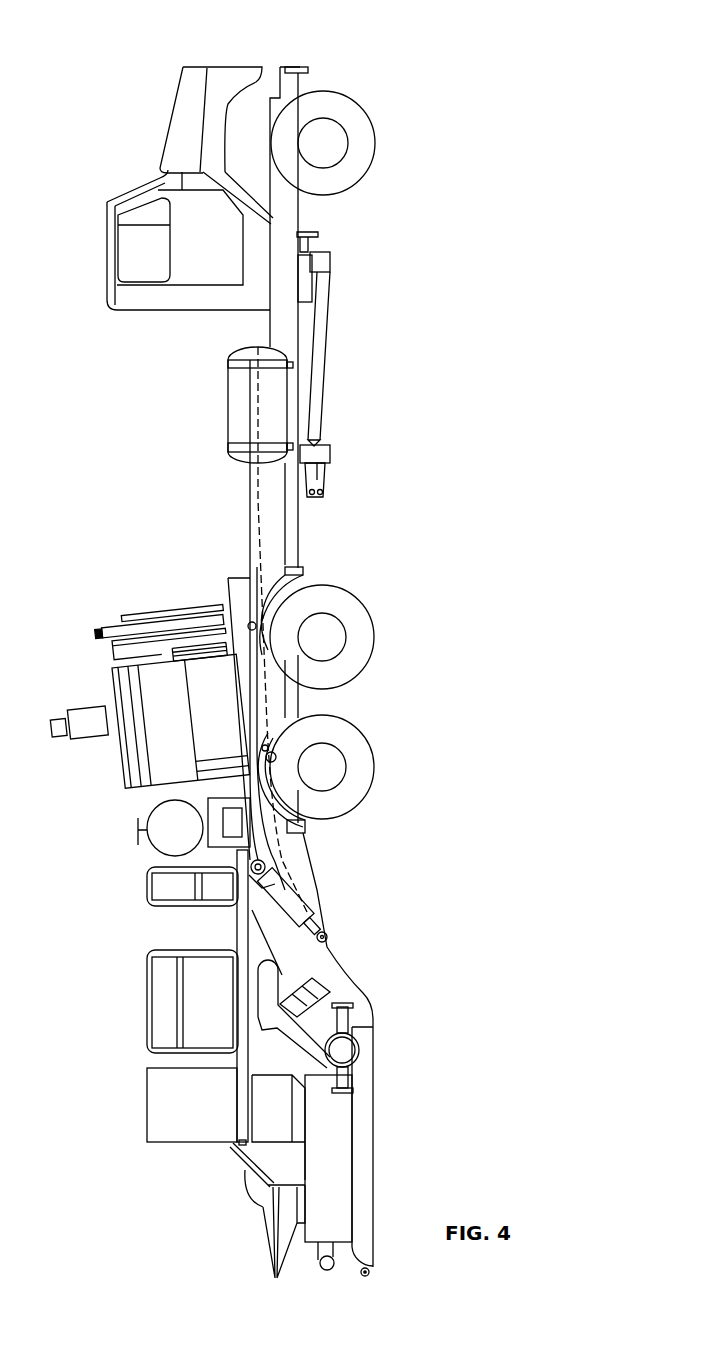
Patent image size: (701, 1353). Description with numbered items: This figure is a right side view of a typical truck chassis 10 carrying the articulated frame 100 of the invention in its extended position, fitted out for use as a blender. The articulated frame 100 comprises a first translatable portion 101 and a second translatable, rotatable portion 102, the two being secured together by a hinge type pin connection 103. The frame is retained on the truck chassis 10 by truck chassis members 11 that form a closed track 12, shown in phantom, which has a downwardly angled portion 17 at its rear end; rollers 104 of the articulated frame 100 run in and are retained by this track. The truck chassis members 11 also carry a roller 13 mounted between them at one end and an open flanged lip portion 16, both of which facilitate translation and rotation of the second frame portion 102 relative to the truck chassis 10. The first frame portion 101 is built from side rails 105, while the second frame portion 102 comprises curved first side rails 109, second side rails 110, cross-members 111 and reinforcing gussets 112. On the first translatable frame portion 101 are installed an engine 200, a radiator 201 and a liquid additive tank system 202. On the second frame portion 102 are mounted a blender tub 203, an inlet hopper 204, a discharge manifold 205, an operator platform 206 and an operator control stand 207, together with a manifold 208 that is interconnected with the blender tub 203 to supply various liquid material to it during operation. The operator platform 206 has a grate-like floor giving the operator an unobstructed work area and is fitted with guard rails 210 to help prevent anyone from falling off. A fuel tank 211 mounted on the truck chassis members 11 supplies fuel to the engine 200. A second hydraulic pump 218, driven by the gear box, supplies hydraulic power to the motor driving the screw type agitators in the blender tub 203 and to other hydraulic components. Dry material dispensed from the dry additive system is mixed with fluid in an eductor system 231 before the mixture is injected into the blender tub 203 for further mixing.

The truck chassis 10 is at (313, 53).
The truck chassis members 11 is at (265, 503).
The closed track 12 is at (256, 521).
The roller 13 is at (329, 937).
The open flanged lip portion 16 is at (275, 835).
The downwardly angled portion 17 is at (267, 748).
The articulated frame 100 is at (168, 570).
The first translatable portion 101 is at (248, 578).
The second translatable, rotatable portion 102 is at (373, 1168).
The hinge type pin connection 103 is at (270, 878).
The rollers 104 is at (249, 624).
The side rails 105 is at (228, 578).
The curved first side rails 109 is at (333, 975).
The second side rails 110 is at (365, 1137).
The cross-members 111 is at (369, 1272).
The reinforcing gussets 112 is at (363, 1038).
The engine 200 is at (137, 690).
The radiator 201 is at (123, 628).
The liquid additive tank system 202 is at (157, 812).
The blender tub 203 is at (338, 1202).
The inlet hopper 204 is at (287, 1235).
The discharge manifold 205 is at (345, 1053).
The operator platform 206 is at (240, 925).
The operator control stand 207 is at (162, 1098).
The manifold 208 is at (325, 1269).
The guard rails 210 is at (148, 890).
The fuel tank 211 is at (238, 395).
The second hydraulic pump 218 is at (324, 478).
The eductor system 231 is at (277, 1132).